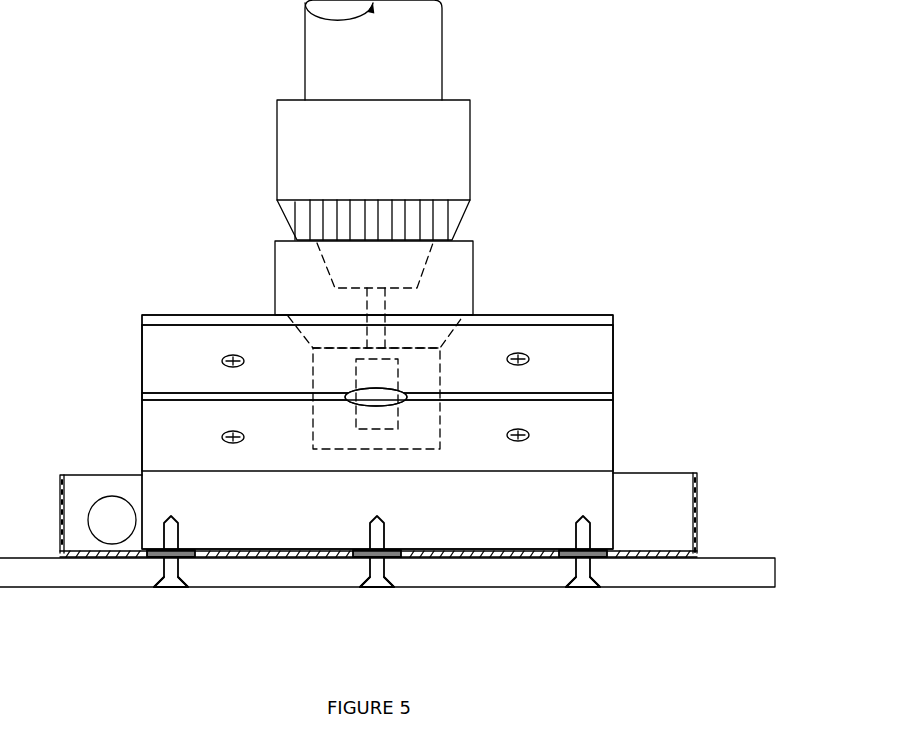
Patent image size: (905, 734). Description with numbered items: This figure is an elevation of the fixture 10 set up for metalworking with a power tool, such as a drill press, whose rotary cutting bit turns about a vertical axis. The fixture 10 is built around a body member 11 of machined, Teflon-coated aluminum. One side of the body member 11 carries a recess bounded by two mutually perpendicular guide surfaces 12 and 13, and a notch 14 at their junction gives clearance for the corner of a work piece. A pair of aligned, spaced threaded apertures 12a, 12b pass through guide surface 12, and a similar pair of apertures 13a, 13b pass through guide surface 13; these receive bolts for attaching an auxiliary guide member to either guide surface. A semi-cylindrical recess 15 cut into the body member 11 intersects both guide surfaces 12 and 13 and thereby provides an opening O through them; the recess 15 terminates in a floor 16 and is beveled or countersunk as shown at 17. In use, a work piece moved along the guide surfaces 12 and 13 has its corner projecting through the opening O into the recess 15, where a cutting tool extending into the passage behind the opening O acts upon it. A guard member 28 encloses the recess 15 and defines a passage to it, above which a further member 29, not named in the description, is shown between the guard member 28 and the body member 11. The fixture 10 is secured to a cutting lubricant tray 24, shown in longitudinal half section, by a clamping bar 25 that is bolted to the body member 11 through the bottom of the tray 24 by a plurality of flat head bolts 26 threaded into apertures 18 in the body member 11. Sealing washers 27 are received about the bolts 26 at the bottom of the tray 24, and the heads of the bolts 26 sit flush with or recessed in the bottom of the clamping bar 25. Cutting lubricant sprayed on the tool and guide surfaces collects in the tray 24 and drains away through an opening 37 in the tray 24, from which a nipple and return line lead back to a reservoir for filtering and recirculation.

The fixture 10 is at (394, 391).
The body member 11 is at (355, 408).
The guide surface 12 is at (421, 340).
The threaded aperture 12a is at (198, 361).
The threaded aperture 12b is at (555, 359).
The guide surface 13 is at (413, 435).
The aperture 13a is at (198, 437).
The aperture 13b is at (555, 435).
The notch 14 is at (418, 397).
The semi-cylindrical recess 15 is at (432, 410).
The floor 16 is at (359, 398).
The bevel 17 is at (394, 347).
The apertures 18 is at (406, 537).
The cutting lubricant tray 24 is at (698, 513).
The clamping bar 25 is at (425, 572).
The flat head bolts 26 is at (360, 605).
The sealing washers 27 is at (378, 592).
The guard member 28 is at (324, 120).
The lens mount block 29 is at (330, 294).
The opening 37 is at (79, 482).
The opening O is at (344, 379).